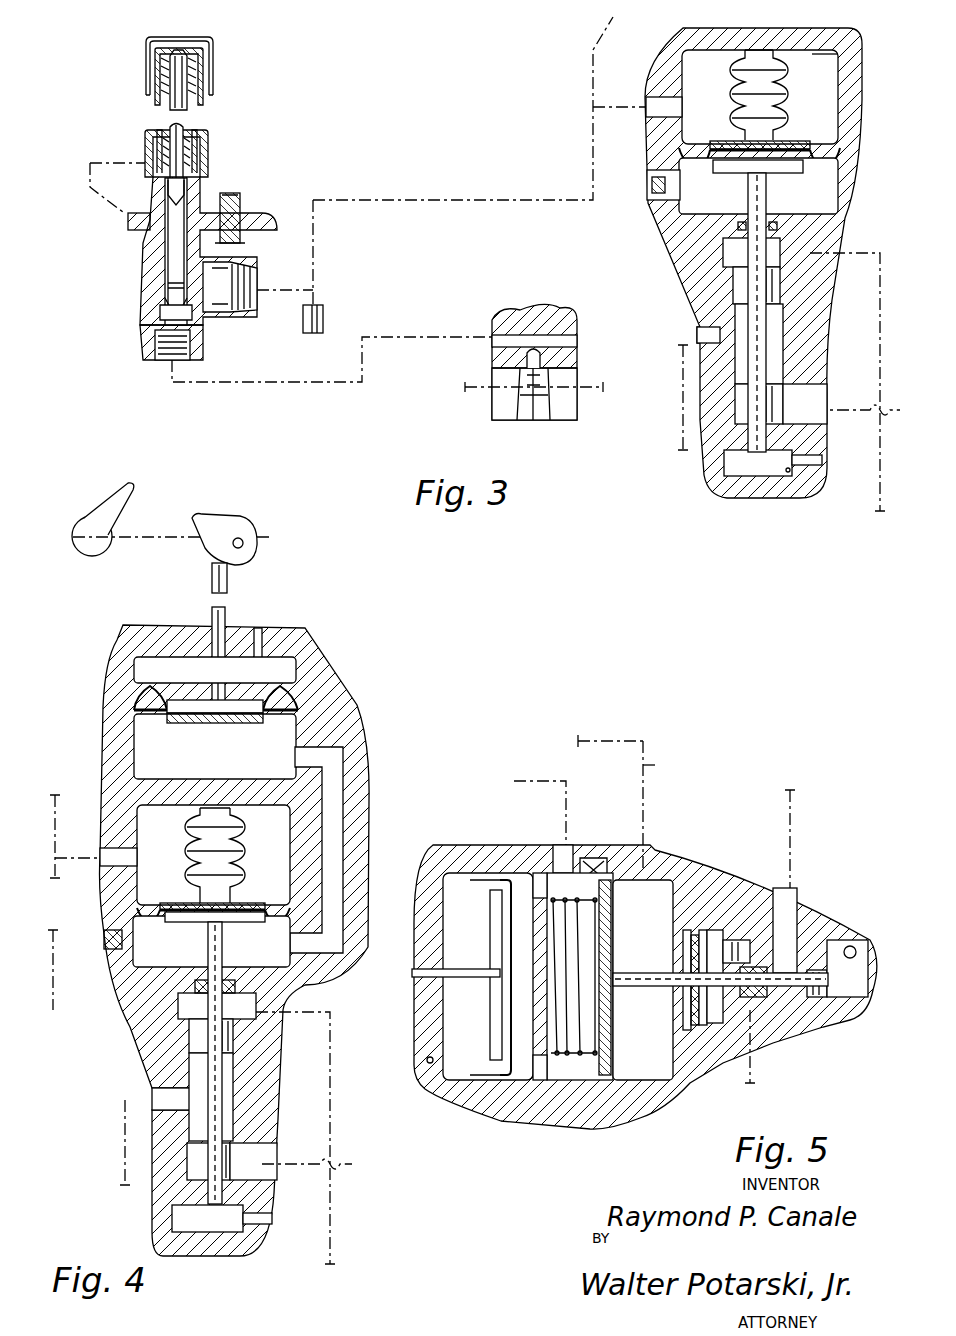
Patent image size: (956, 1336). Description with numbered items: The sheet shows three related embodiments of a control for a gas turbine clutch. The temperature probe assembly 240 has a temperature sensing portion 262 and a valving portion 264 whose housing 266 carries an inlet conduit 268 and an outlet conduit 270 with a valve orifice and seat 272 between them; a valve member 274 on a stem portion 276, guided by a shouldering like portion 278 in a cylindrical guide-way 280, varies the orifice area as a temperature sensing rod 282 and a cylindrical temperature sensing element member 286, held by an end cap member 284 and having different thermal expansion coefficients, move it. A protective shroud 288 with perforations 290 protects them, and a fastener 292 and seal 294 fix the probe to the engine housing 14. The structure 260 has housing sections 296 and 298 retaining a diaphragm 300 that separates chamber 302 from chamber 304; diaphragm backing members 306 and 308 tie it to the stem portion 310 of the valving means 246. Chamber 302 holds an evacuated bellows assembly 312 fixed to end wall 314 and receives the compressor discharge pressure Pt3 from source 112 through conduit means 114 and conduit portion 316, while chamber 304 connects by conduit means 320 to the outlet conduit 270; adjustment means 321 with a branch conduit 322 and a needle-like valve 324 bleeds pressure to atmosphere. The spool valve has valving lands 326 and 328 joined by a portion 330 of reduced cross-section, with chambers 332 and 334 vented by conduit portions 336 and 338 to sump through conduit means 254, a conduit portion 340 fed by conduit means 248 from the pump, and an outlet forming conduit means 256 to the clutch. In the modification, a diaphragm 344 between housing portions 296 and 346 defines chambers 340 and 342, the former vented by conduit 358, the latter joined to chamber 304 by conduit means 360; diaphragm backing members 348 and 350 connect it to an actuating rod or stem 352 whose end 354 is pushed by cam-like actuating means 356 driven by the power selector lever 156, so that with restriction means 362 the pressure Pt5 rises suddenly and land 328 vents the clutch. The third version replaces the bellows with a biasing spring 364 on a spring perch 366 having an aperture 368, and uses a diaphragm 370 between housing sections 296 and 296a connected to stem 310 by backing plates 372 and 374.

In FIG. 3, the housing 14 is at (90, 173).
In FIG. 3, the source of compressor discharge pressure 112 is at (318, 308).
In FIG. 3, the conduit means 114 is at (593, 100).
In FIG. 4, the conduit means 114 is at (50, 880).
In FIG. 5, the conduit means 114 is at (578, 741).
In FIG. 4, the power selector lever 156 is at (133, 487).
In FIG. 3, the temperature probe assembly 240 is at (116, 49).
In FIG. 3, the valving means 246 is at (694, 292).
In FIG. 4, the valving means 246 is at (90, 1086).
In FIG. 3, the conduit means 248 is at (675, 450).
In FIG. 4, the conduit means 248 is at (125, 1100).
In FIG. 5, the conduit means 248 is at (795, 830).
In FIG. 3, the conduit means 254 is at (878, 515).
In FIG. 4, the conduit means 254 is at (335, 1250).
In FIG. 5, the conduit means 254 is at (855, 946).
In FIG. 3, the conduit means 256 is at (838, 400).
In FIG. 4, the conduit means 256 is at (262, 1170).
In FIG. 5, the conduit means 256 is at (753, 1082).
In FIG. 3, the structure 260 is at (678, 498).
In FIG. 3, the temperature sensing portion 262 is at (238, 115).
In FIG. 3, the valving portion 264 is at (106, 358).
In FIG. 3, the housing 266 is at (150, 255).
In FIG. 3, the inlet conduit 268 is at (245, 270).
In FIG. 3, the outlet conduit 270 is at (158, 345).
In FIG. 3, the valve orifice and seat 272 is at (185, 312).
In FIG. 3, the valve member 274 is at (168, 305).
In FIG. 3, the stem portion 276 is at (182, 200).
In FIG. 3, the shouldering like portion 278 is at (165, 288).
In FIG. 3, the cylindrical guide-way 280 is at (165, 237).
In FIG. 3, the temperature sensing rod 282 is at (170, 125).
In FIG. 3, the end cap member 284 is at (185, 55).
In FIG. 3, the temperature sensing element member 286 is at (203, 92).
In FIG. 3, the protective shroud 288 is at (172, 38).
In FIG. 3, the perforations 290 is at (160, 80).
In FIG. 3, the fastener 292 is at (240, 238).
In FIG. 3, the seal 294 is at (128, 216).
In FIG. 3, the housing section 296 is at (855, 70).
In FIG. 4, the housing section 296 is at (368, 735).
In FIG. 5, the housing section 296 is at (688, 1095).
In FIG. 5, the housing section 296a is at (730, 883).
In FIG. 3, the housing section 298 is at (848, 190).
In FIG. 4, the housing section 298 is at (140, 1000).
In FIG. 5, the housing section 298 is at (585, 1130).
In FIG. 3, the diaphragm 300 is at (830, 146).
In FIG. 4, the diaphragm 300 is at (258, 903).
In FIG. 5, the diaphragm 300 is at (595, 858).
In FIG. 3, the chamber 302 is at (700, 58).
In FIG. 4, the chamber 302 is at (250, 805).
In FIG. 3, the chamber 304 is at (690, 195).
In FIG. 4, the chamber 304 is at (125, 960).
In FIG. 3, the diaphragm backing member 306 is at (735, 140).
In FIG. 4, the diaphragm backing member 306 is at (175, 903).
In FIG. 5, the diaphragm backing member 306 is at (605, 1090).
In FIG. 3, the diaphragm backing member 308 is at (681, 162).
In FIG. 4, the diaphragm backing member 308 is at (170, 922).
In FIG. 5, the diaphragm backing member 308 is at (612, 1050).
In FIG. 3, the stem portion 310 is at (768, 196).
In FIG. 4, the stem portion 310 is at (222, 940).
In FIG. 5, the stem portion 310 is at (675, 980).
In FIG. 3, the bellows assembly 312 is at (780, 86).
In FIG. 4, the bellows assembly 312 is at (240, 855).
In FIG. 3, the end wall 314 is at (825, 56).
In FIG. 4, the end wall 314 is at (120, 810).
In FIG. 3, the conduit portion 316 is at (647, 105).
In FIG. 4, the conduit portion 316 is at (100, 858).
In FIG. 5, the conduit portion 316 is at (648, 845).
In FIG. 3, the conduit means 320 is at (278, 384).
In FIG. 4, the conduit means 320 is at (53, 1010).
In FIG. 5, the conduit means 320 is at (522, 770).
In FIG. 3, the adjustment means 321 is at (482, 357).
In FIG. 3, the branch conduit 322 is at (540, 355).
In FIG. 3, the needle-like valve 324 is at (530, 385).
In FIG. 3, the valving land 326 is at (786, 280).
In FIG. 4, the valving land 326 is at (233, 1030).
In FIG. 5, the valving land 326 is at (750, 940).
In FIG. 3, the valving land 328 is at (775, 395).
In FIG. 4, the valving land 328 is at (233, 1150).
In FIG. 5, the valving land 328 is at (820, 1000).
In FIG. 3, the portion of reduced cross-section 330 is at (780, 315).
In FIG. 4, the portion of reduced cross-section 330 is at (233, 1085).
In FIG. 5, the portion of reduced cross-section 330 is at (797, 985).
In FIG. 3, the chamber 332 is at (723, 250).
In FIG. 4, the chamber 332 is at (178, 1005).
In FIG. 5, the chamber 332 is at (740, 1037).
In FIG. 3, the chamber 334 is at (728, 470).
In FIG. 4, the chamber 334 is at (172, 1215).
In FIG. 5, the chamber 334 is at (860, 1003).
In FIG. 3, the conduit portion 336 is at (826, 253).
In FIG. 4, the conduit portion 336 is at (262, 1015).
In FIG. 3, the conduit portion 338 is at (795, 480).
In FIG. 4, the conduit portion 338 is at (255, 1222).
In FIG. 3, the conduit portion 340 is at (697, 332).
In FIG. 4, the conduit portion 340 is at (305, 642).
In FIG. 5, the conduit portion 340 is at (797, 892).
In FIG. 4, the chamber 342 is at (140, 722).
In FIG. 5, the chamber 342 is at (490, 880).
In FIG. 4, the diaphragm 344 is at (292, 700).
In FIG. 5, the diaphragm 344 is at (470, 880).
In FIG. 4, the housing portion 346 is at (123, 630).
In FIG. 5, the housing portion 346 is at (455, 1080).
In FIG. 4, the diaphragm backing member 348 is at (175, 700).
In FIG. 5, the diaphragm backing member 348 is at (497, 1005).
In FIG. 4, the diaphragm backing member 350 is at (198, 723).
In FIG. 4, the actuating rod or stem 352 is at (226, 680).
In FIG. 5, the actuating rod or stem 352 is at (450, 982).
In FIG. 4, the end of stem 354 is at (212, 568).
In FIG. 4, the actuating means 356 is at (250, 518).
In FIG. 4, the conduit 358 is at (259, 628).
In FIG. 5, the conduit 358 is at (435, 1065).
In FIG. 4, the conduit means 360 is at (345, 780).
In FIG. 4, the restriction means 362 is at (137, 908).
In FIG. 5, the restriction means 362 is at (560, 845).
In FIG. 5, the biasing spring 364 is at (555, 925).
In FIG. 5, the spring perch 366 is at (535, 1088).
In FIG. 5, the aperture 368 is at (500, 1085).
In FIG. 5, the diaphragm 370 is at (690, 930).
In FIG. 5, the backing plate 372 is at (698, 945).
In FIG. 5, the backing plate 374 is at (690, 1000).
In FIG. 3, the compressor discharge pressure Pt3 is at (410, 200).
In FIG. 5, the compressor discharge pressure Pt3 is at (655, 765).
In FIG. 3, the pressure in chamber 342 and conduit 360 Pt5 is at (413, 336).
In FIG. 5, the pressure in chamber 342 and conduit 360 Pt5 is at (566, 781).